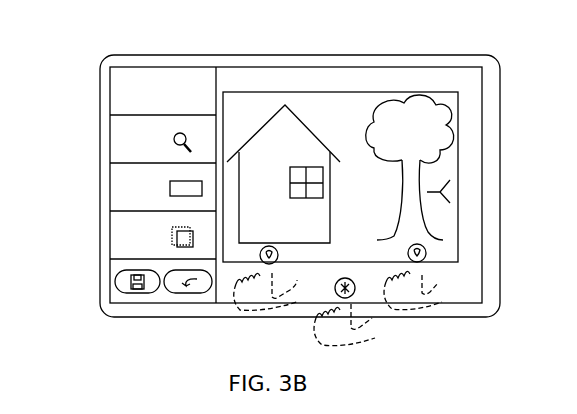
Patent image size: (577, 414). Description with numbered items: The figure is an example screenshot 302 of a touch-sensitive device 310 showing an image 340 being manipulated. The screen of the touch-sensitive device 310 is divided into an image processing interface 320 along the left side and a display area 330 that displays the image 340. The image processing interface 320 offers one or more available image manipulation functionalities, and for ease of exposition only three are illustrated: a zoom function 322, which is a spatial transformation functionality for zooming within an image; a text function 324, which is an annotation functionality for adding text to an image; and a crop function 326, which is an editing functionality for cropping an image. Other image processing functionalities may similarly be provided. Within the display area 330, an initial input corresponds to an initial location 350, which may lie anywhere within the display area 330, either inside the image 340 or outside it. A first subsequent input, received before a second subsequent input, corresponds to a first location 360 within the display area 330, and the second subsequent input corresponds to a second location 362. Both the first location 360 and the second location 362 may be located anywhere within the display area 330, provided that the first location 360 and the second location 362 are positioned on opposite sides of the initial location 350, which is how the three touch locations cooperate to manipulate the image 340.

The screenshot 302 is at (429, 23).
The touch-sensitive device 310 is at (180, 55).
The image processing interface 320 is at (133, 75).
The zoom function 322 is at (117, 144).
The text function 324 is at (117, 191).
The crop function 326 is at (117, 234).
The display area 330 is at (247, 80).
The image 340 is at (460, 108).
The initial location 350 is at (353, 297).
The first location 360 is at (425, 256).
The second location 362 is at (265, 247).